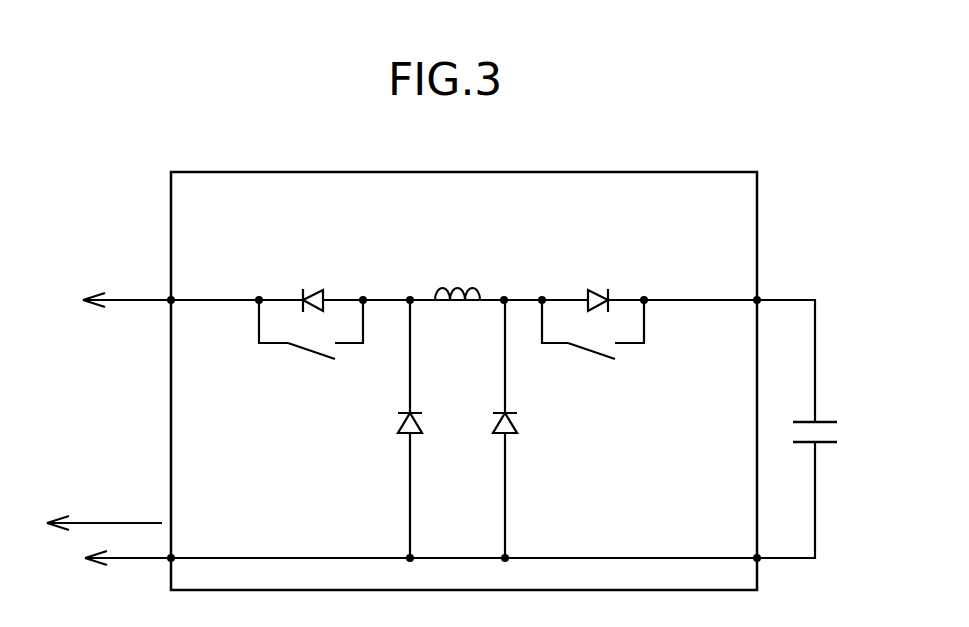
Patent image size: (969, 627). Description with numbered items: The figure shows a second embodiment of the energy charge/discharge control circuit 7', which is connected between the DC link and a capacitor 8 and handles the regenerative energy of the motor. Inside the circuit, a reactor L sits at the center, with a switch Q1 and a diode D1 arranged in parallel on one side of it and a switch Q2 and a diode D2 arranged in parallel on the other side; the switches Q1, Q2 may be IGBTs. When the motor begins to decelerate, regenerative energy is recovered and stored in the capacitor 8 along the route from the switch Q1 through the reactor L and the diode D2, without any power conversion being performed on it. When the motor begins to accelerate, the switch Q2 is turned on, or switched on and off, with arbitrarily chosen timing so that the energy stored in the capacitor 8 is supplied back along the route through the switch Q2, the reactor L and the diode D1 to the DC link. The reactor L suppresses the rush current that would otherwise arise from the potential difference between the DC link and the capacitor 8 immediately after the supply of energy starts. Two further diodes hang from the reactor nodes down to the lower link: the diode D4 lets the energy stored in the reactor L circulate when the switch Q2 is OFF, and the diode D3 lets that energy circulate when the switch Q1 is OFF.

The energy charge/discharge control circuit 7' is at (431, 354).
The capacitor 8 is at (827, 447).
The diode D1 is at (314, 287).
The diode D2 is at (599, 287).
The diode D3 is at (392, 429).
The diode D4 is at (522, 429).
The switch Q1 is at (311, 345).
The switch Q2 is at (593, 345).
The reactor L is at (457, 280).